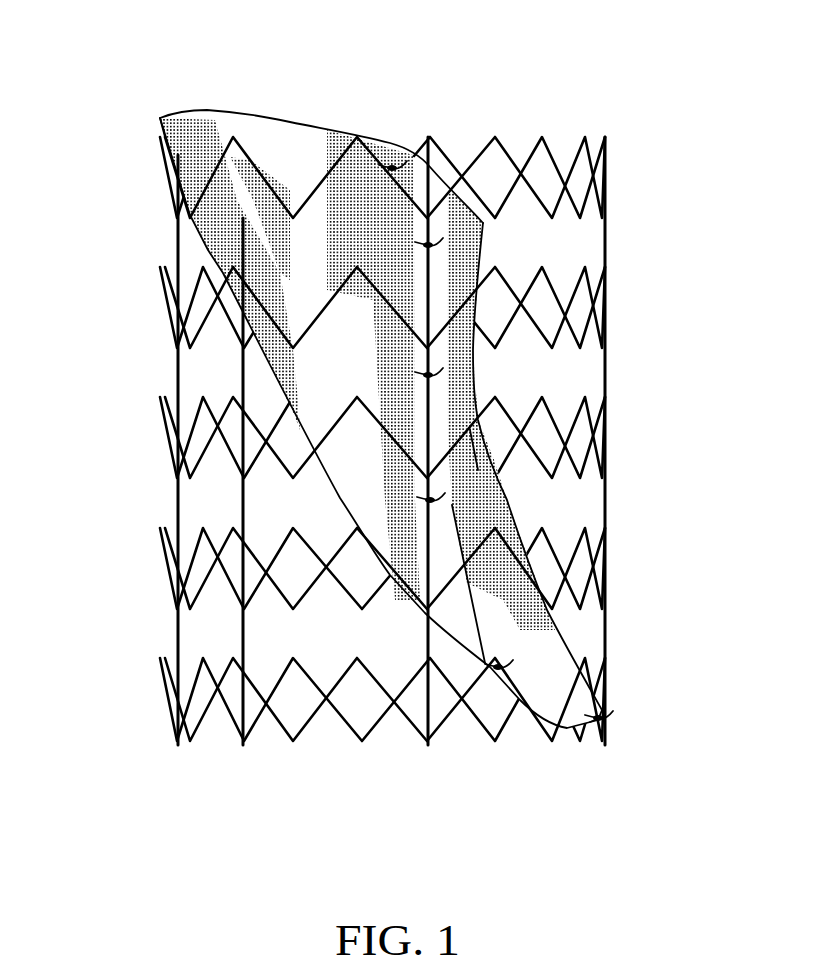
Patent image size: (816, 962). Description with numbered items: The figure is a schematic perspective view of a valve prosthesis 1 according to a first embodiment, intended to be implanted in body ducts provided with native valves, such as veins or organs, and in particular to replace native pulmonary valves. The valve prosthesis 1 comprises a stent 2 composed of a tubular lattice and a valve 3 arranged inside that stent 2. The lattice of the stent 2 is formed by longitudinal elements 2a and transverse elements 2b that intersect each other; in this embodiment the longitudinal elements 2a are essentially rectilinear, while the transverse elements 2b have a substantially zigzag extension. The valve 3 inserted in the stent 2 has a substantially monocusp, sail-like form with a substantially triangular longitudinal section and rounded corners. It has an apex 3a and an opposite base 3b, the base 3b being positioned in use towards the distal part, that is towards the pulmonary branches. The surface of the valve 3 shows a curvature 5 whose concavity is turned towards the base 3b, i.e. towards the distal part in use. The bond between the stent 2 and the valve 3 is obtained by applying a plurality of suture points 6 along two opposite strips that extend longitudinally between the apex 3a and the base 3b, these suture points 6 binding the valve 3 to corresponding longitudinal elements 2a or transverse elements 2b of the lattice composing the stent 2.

The valve prosthesis 1 is at (390, 410).
The stent 2 is at (390, 477).
The longitudinal elements 2a is at (176, 365).
The transverse elements 2b is at (548, 404).
The valve 3 is at (415, 412).
The apex 3a is at (600, 722).
The base 3b is at (212, 108).
The curvature 5 is at (480, 502).
The suture points 6 is at (427, 238).